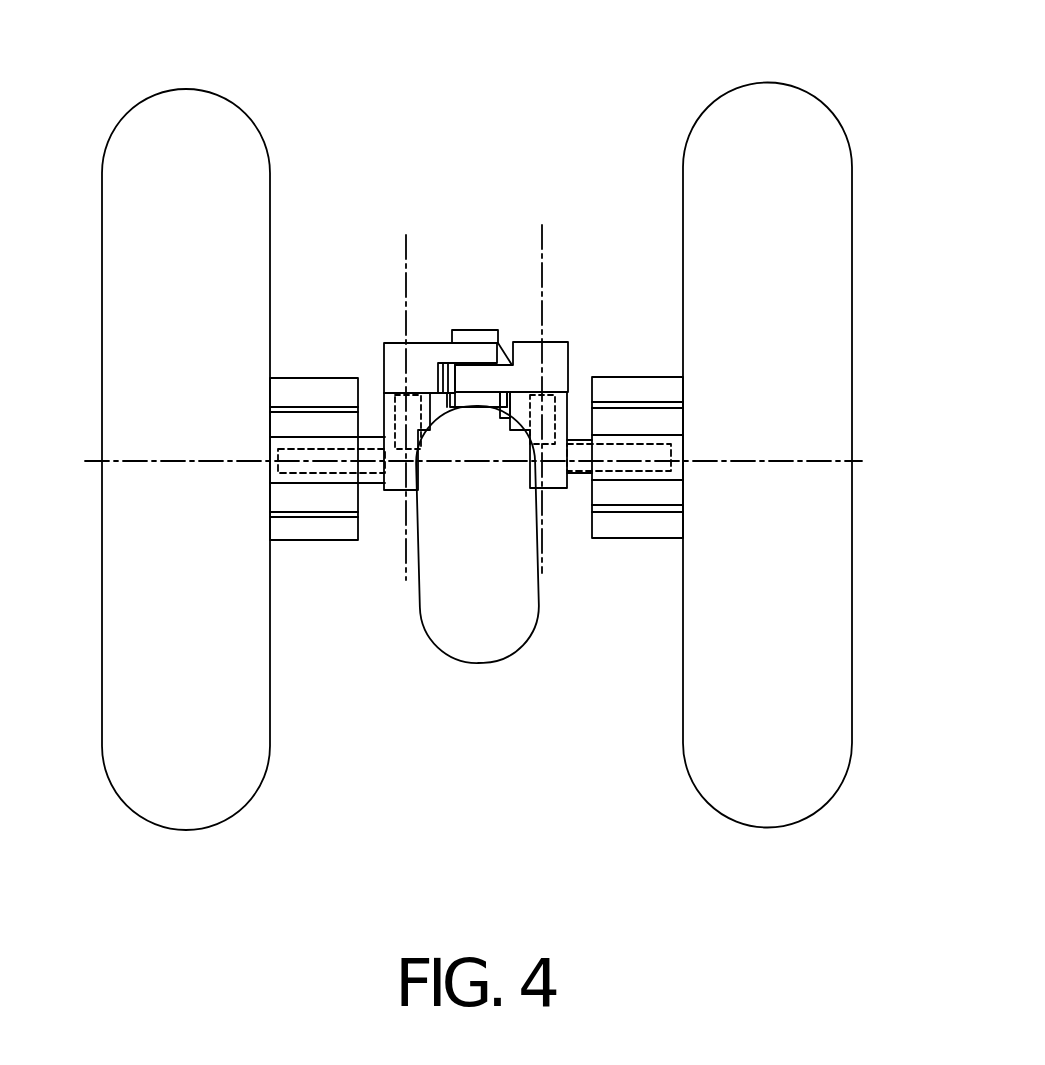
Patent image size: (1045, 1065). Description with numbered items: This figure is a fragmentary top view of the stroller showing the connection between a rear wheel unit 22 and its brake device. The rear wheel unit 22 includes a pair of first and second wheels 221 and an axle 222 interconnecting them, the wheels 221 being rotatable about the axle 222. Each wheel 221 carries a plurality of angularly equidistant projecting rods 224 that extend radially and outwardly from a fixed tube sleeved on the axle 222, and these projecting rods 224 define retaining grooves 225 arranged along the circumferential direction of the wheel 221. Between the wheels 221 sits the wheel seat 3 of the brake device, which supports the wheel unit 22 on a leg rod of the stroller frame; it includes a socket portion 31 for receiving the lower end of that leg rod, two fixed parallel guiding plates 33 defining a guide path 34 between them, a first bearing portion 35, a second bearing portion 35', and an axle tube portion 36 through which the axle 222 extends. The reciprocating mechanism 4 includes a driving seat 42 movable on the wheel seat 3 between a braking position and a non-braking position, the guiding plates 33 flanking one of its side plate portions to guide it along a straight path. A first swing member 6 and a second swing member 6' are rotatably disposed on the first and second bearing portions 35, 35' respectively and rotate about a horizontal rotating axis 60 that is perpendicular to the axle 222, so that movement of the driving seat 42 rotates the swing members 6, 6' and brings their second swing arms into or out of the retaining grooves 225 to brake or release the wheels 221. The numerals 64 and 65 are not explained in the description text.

The rear wheel unit 22 is at (838, 104).
The first and second wheels 221 is at (235, 184).
The axle 222 is at (580, 477).
The projecting rods 224 is at (618, 495).
The retaining grooves 225 is at (676, 465).
The wheel seat 3 is at (490, 676).
The socket portion 31 is at (448, 638).
The guiding plates 33 is at (457, 403).
The guide path 34 is at (458, 410).
The first bearing portion 35 is at (371, 391).
The second bearing portion 35' is at (705, 386).
The axle tube portion 36 is at (387, 485).
The reciprocating mechanism 4 is at (486, 327).
The driving seat 42 is at (468, 330).
The first swing member 6 is at (396, 311).
The second swing member 6' is at (519, 328).
The rotating axis 60 is at (407, 237).
The axle hole 64 is at (290, 465).
The bolt 65 is at (418, 355).